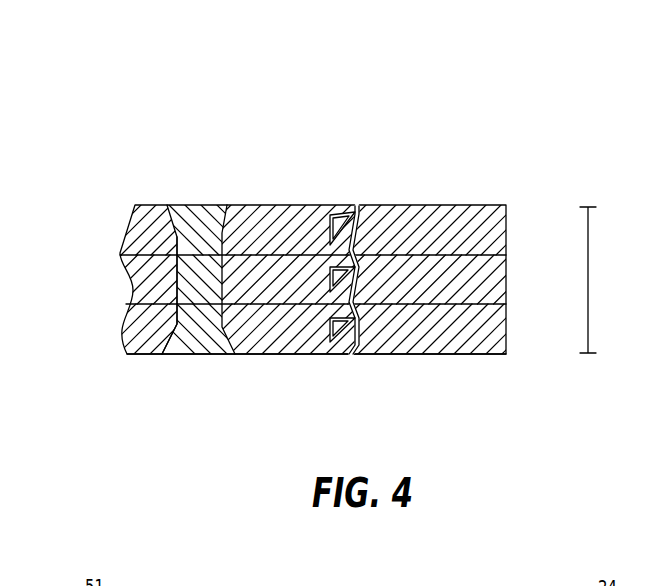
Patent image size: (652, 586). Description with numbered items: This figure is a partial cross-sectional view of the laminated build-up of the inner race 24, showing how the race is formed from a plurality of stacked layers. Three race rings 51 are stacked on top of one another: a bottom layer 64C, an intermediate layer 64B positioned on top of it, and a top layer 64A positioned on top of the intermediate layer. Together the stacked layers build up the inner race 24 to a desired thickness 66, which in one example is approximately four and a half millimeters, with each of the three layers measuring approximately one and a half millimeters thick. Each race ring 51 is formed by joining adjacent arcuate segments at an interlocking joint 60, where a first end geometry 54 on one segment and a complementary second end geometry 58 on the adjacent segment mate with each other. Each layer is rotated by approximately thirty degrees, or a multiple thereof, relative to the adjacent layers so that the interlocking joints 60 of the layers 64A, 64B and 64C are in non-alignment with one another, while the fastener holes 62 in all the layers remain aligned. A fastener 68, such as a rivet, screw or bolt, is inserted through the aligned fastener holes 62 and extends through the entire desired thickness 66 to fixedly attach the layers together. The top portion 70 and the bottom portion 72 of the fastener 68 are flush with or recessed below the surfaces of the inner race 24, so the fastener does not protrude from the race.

The inner race 24 is at (480, 88).
The race ring 51 is at (528, 143).
The first end geometry 54 is at (363, 216).
The second end geometry 58 is at (365, 245).
The interlocking joint 60 is at (365, 206).
The fastener holes 62 is at (175, 243).
The top layer 64A is at (503, 237).
The intermediate layer 64B is at (503, 285).
The bottom layer 64C is at (503, 332).
The desired thickness 66 is at (590, 283).
The fastener 68 is at (192, 280).
The top portion of the fastener 70 is at (193, 215).
The bottom portion of the fastener 72 is at (200, 342).